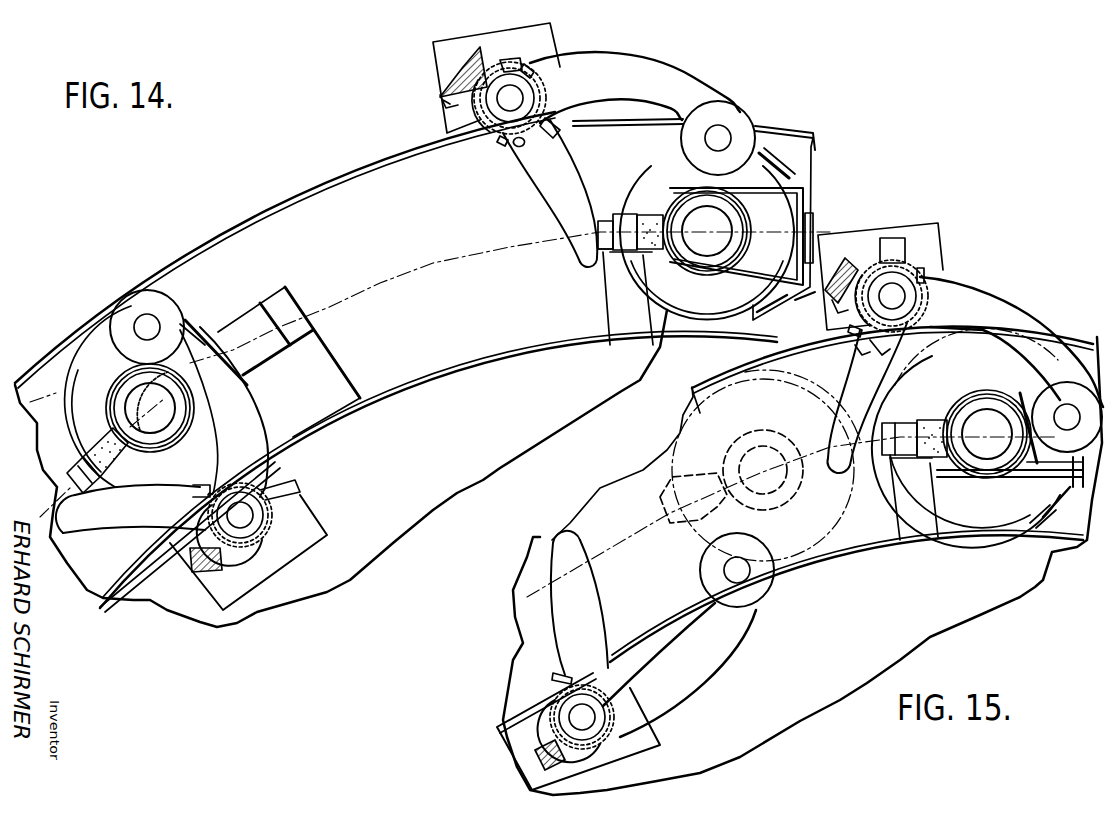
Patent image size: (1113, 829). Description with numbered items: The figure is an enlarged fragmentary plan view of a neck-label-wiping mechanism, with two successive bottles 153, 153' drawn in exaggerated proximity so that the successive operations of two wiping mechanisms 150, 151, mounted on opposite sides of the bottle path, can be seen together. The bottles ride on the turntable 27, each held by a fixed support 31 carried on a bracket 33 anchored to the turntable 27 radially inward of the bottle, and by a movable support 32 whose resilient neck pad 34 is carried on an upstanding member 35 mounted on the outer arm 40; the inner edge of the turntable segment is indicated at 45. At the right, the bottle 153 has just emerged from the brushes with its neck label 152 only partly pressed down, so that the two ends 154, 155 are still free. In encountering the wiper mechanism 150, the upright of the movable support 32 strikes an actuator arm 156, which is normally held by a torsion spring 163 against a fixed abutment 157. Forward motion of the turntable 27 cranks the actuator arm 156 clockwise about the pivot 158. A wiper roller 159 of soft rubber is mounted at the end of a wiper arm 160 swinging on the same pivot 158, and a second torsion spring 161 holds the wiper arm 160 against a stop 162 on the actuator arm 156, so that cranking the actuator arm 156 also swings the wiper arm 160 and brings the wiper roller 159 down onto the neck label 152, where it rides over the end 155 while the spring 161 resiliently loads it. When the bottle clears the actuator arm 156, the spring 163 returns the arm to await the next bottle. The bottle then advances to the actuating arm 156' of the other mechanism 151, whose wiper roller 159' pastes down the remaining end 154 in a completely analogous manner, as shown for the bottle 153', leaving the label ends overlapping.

In FIG. 14, the turntable 27 is at (303, 200).
In FIG. 15, the turntable 27 is at (1063, 337).
In FIG. 14, the fixed support 31 is at (205, 322).
In FIG. 15, the fixed support 31 is at (1040, 545).
In FIG. 14, the movable support 32 is at (64, 468).
In FIG. 15, the movable support 32 is at (880, 432).
In FIG. 14, the bracket 33 is at (328, 380).
In FIG. 14, the neck pad 34 is at (650, 218).
In FIG. 15, the neck pad 34 is at (937, 420).
In FIG. 14, the upstanding member 35 is at (645, 252).
In FIG. 15, the upstanding member 35 is at (890, 462).
In FIG. 14, the outer arm 40 is at (150, 537).
In FIG. 15, the outer arm 40 is at (900, 515).
In FIG. 14, the annular ring (inner edge) 45 is at (473, 367).
In FIG. 15, the annular ring (inner edge) 45 is at (870, 552).
In FIG. 14, the wiper mechanism 150 is at (490, 140).
In FIG. 15, the wiper mechanism 150 is at (930, 269).
In FIG. 14, the wiper mechanism 151 is at (275, 487).
In FIG. 15, the wiper mechanism 151 is at (530, 692).
In FIG. 14, the neck label 152 is at (150, 468).
In FIG. 15, the neck label 152 is at (963, 470).
In FIG. 14, the bottle 153 is at (707, 267).
In FIG. 15, the bottle 153 is at (836, 458).
In FIG. 14, the bottle 153' is at (69, 396).
In FIG. 14, the label end 154 is at (178, 375).
In FIG. 15, the label end 154 is at (933, 410).
In FIG. 14, the label end 155 is at (195, 415).
In FIG. 15, the label end 155 is at (1015, 470).
In FIG. 14, the actuator arm 156 is at (550, 193).
In FIG. 15, the actuator arm 156 is at (857, 410).
In FIG. 14, the actuating arm 156' is at (133, 520).
In FIG. 15, the actuating arm 156' is at (561, 593).
In FIG. 14, the fixed abutment 157 is at (443, 80).
In FIG. 15, the fixed abutment 157 is at (840, 268).
In FIG. 14, the pivot 158 is at (510, 98).
In FIG. 15, the pivot 158 is at (905, 296).
In FIG. 14, the wiper roller 159 is at (726, 131).
In FIG. 15, the wiper roller 159 is at (1067, 404).
In FIG. 14, the wiper roller 159' is at (163, 324).
In FIG. 15, the wiper roller 159' is at (758, 570).
In FIG. 14, the wiper arm 160 is at (638, 62).
In FIG. 15, the wiper arm 160 is at (1002, 304).
In FIG. 14, the torsion spring 161 is at (530, 72).
In FIG. 15, the torsion spring 161 is at (926, 280).
In FIG. 14, the stop 162 is at (560, 131).
In FIG. 15, the stop 162 is at (882, 356).
In FIG. 14, the torsion spring 163 is at (447, 108).
In FIG. 15, the torsion spring 163 is at (848, 331).